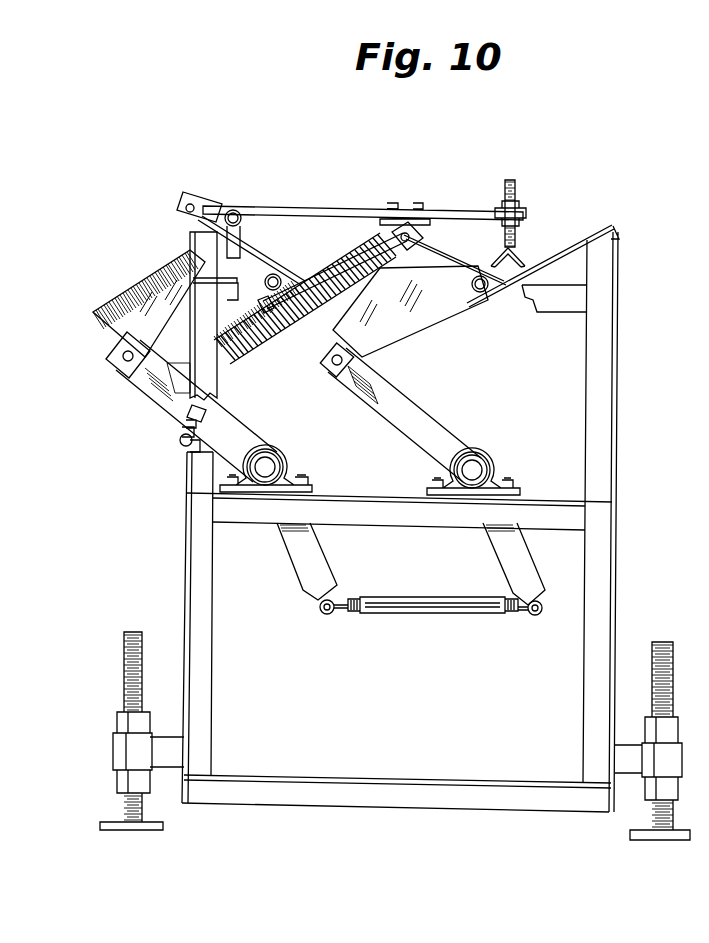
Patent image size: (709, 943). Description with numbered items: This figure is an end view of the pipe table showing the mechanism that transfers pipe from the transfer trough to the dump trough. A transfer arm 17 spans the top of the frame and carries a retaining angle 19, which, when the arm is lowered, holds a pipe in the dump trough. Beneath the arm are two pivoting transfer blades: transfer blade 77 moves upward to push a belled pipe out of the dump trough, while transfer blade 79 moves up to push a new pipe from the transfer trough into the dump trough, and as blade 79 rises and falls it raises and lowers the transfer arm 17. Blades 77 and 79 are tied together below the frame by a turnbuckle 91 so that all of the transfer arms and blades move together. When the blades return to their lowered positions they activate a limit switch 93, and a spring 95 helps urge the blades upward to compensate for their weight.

The transfer arm 17 is at (352, 207).
The retaining angle 19 is at (530, 245).
The transfer blade 77 is at (388, 330).
The transfer blade 79 is at (177, 292).
The turnbuckle 91 is at (405, 612).
The limit switch 93 is at (182, 437).
The spring 95 is at (262, 345).